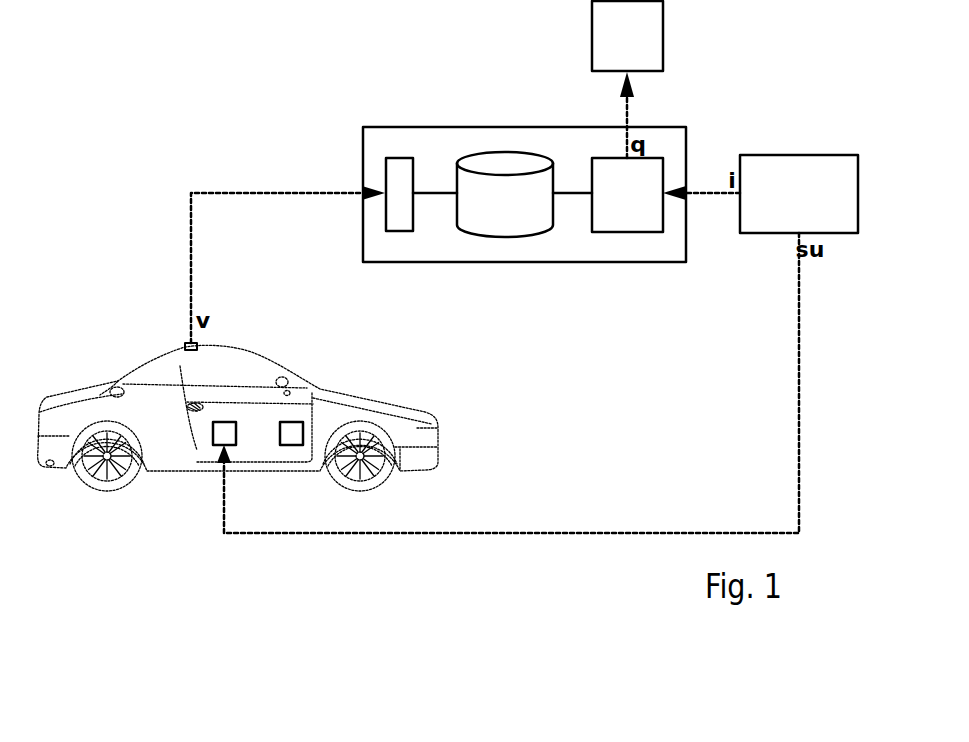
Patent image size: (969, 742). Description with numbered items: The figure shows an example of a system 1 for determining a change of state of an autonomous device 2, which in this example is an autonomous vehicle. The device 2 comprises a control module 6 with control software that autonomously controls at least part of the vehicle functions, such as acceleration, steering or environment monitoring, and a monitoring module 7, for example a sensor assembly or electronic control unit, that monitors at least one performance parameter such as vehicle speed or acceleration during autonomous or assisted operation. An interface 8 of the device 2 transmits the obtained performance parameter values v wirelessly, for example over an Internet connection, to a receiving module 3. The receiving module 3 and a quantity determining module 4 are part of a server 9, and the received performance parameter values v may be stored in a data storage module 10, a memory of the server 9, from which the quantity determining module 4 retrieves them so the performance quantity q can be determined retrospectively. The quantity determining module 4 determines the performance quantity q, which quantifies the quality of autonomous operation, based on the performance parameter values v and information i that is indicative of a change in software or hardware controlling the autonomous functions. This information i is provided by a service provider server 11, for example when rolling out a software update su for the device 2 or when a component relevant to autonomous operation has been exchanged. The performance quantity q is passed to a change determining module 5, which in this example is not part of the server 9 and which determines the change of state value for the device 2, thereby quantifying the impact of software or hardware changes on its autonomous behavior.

The system 1 is at (228, 102).
The autonomous device 2 is at (88, 381).
The receiving module 3 is at (400, 158).
The quantity determining module 4 is at (630, 232).
The change determining module 5 is at (663, 33).
The control module 6 is at (212, 445).
The monitoring module 7 is at (290, 445).
The interface 8 is at (185, 345).
The server 9 is at (363, 262).
The data storage module 10 is at (505, 152).
The service provider server 11 is at (740, 233).